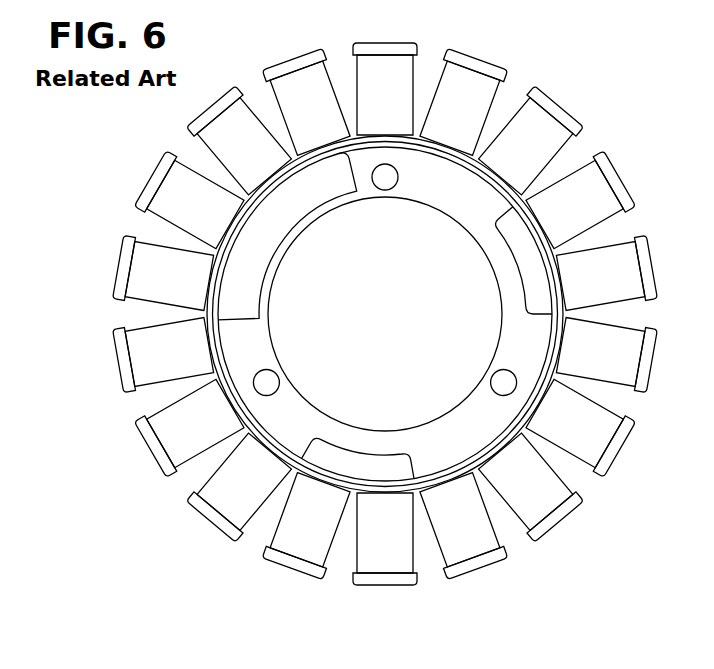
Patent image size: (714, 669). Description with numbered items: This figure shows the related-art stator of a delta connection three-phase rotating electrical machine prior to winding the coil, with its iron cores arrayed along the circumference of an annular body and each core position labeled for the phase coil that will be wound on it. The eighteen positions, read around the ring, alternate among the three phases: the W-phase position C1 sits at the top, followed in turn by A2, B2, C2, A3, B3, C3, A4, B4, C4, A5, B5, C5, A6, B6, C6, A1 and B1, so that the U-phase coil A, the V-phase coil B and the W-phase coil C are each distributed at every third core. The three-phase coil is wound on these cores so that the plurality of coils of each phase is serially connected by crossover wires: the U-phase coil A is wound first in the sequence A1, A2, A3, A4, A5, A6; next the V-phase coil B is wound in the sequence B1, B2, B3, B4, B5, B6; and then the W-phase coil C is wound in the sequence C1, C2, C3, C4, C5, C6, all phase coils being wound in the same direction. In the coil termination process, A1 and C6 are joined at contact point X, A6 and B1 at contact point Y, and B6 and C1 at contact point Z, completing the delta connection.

The W-phase coil C first coil C1 is at (385, 89).
The U-phase coil A second coil A2 is at (463, 102).
The V-phase coil B second coil B2 is at (531, 141).
The W-phase coil C second coil C2 is at (580, 200).
The U-phase coil A third coil A3 is at (606, 273).
The V-phase coil B third coil B3 is at (606, 355).
The W-phase coil C third coil C3 is at (580, 427).
The U-phase coil A fourth coil A4 is at (531, 487).
The V-phase coil B fourth coil B4 is at (463, 526).
The W-phase coil C fourth coil C4 is at (385, 539).
The U-phase coil A fifth coil A5 is at (306, 526).
The V-phase coil B fifth coil B5 is at (240, 487).
The W-phase coil C fifth coil C5 is at (190, 427).
The U-phase coil A sixth coil A6 is at (163, 355).
The V-phase coil B sixth coil B6 is at (163, 273).
The W-phase coil C sixth coil C6 is at (190, 200).
The U-phase coil A first coil A1 is at (240, 141).
The V-phase coil B first coil B1 is at (306, 102).